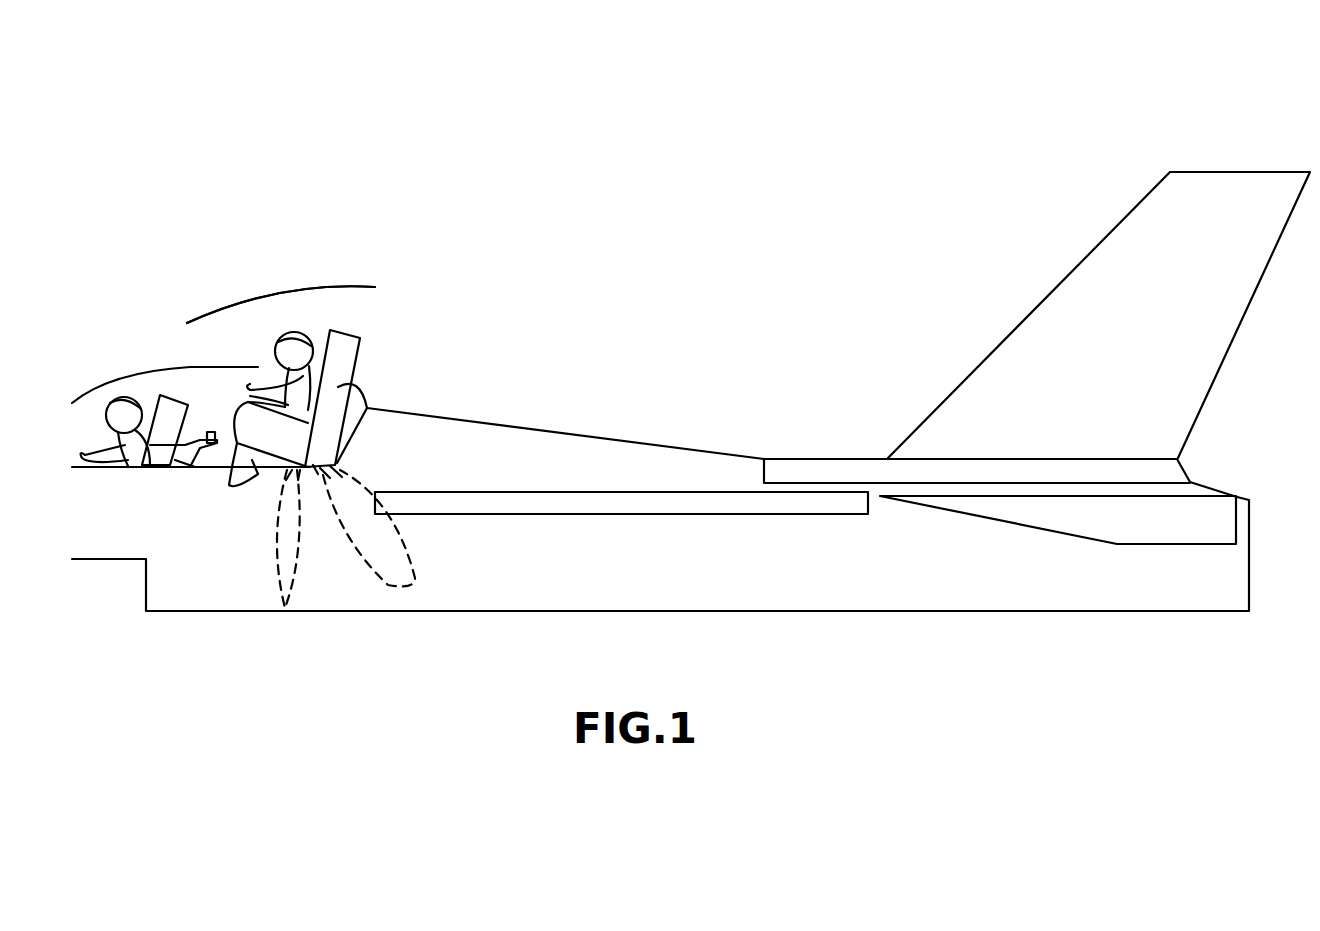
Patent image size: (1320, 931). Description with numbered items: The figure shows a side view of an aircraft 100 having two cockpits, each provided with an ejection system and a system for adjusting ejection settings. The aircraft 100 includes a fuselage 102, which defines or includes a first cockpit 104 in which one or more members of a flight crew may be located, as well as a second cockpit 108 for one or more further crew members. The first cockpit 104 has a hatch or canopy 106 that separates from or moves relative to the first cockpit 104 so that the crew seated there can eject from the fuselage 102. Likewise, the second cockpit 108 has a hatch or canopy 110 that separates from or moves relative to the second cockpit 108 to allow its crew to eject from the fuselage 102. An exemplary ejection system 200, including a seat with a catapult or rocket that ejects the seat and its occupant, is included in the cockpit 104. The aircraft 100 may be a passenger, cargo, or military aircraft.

The aircraft 100 is at (857, 213).
The fuselage 102 is at (795, 448).
The cockpit 104 is at (96, 356).
The canopy 106 is at (187, 368).
The second cockpit 108 is at (358, 338).
The canopy 110 is at (232, 302).
The ejection system 200 is at (372, 257).